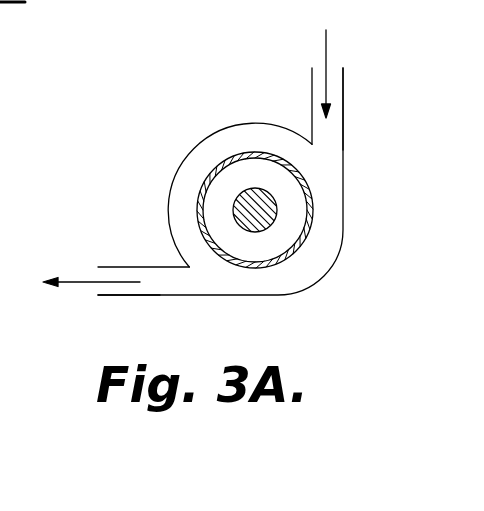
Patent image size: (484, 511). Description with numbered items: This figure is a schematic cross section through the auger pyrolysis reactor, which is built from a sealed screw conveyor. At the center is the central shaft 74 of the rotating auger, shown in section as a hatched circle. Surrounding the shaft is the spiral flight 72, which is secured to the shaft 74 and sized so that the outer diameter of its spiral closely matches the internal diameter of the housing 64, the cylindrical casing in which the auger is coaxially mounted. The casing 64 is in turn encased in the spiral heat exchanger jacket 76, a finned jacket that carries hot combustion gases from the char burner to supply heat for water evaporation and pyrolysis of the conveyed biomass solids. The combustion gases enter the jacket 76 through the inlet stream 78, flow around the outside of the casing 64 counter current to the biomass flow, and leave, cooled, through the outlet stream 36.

The outlet stream 36 is at (78, 283).
The housing 64 is at (208, 180).
The spiral flight 72 is at (222, 230).
The central shaft 74 is at (256, 202).
The spiral heat exchanger jacket 76 is at (315, 257).
The inlet stream 78 is at (327, 40).